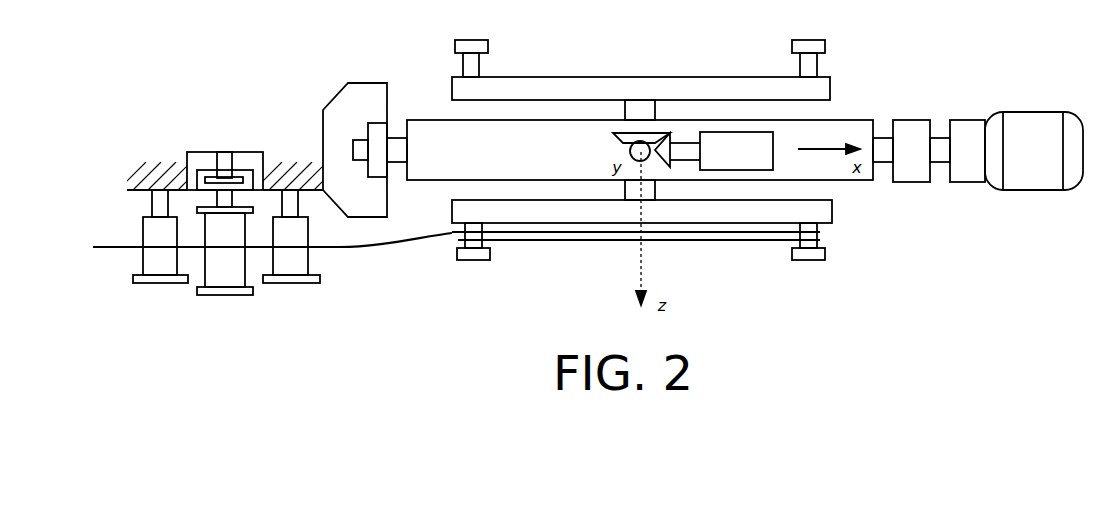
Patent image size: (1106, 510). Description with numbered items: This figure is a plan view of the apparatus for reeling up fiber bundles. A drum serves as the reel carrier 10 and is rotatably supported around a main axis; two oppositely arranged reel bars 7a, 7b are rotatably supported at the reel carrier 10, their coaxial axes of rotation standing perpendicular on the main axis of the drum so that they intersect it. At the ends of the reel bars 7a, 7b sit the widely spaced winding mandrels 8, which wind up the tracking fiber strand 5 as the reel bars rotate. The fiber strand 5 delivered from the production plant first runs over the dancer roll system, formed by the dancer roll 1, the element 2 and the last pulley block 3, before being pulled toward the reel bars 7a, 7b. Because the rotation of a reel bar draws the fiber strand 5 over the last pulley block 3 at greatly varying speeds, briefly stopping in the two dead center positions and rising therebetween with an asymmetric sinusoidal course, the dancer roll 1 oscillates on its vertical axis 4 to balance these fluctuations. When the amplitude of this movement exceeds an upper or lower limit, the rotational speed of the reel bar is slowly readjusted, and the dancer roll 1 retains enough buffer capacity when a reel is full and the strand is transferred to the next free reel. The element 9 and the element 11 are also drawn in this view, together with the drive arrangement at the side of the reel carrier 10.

The dancer roll 1 is at (228, 296).
The dancer roll system element 2 is at (162, 288).
The last pulley block 3 is at (293, 288).
The vertical axis 4 is at (238, 162).
The fiber strand 5 is at (382, 246).
The reel bar 7a is at (737, 72).
The reel bar 7b is at (835, 210).
The winding mandrel 8 is at (483, 67).
The sensor 9 is at (733, 155).
The reel carrier 10 is at (430, 135).
The motor 11 is at (1035, 122).